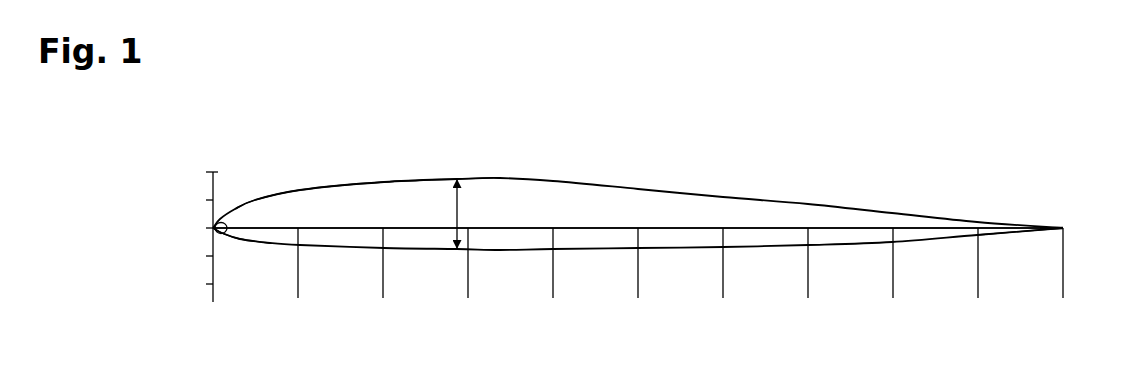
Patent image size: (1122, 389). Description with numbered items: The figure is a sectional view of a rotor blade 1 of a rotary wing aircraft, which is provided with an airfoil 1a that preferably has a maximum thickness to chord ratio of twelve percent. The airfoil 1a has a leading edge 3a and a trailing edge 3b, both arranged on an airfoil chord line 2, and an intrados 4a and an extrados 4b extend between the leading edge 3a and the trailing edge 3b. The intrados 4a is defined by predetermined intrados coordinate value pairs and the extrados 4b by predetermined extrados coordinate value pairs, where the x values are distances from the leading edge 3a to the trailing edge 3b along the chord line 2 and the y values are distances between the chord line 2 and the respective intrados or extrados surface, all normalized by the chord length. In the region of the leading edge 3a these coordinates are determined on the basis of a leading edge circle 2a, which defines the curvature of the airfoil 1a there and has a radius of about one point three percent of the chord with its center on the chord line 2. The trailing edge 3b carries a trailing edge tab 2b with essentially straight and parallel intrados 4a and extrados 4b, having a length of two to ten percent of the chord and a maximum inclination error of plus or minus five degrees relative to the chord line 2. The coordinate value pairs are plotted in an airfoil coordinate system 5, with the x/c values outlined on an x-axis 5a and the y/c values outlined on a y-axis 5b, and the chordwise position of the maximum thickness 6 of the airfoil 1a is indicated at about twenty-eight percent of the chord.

The rotor blade 1 is at (592, 204).
The airfoil 1a is at (388, 167).
The airfoil chord line 2 is at (780, 228).
The leading edge circle 2a is at (237, 232).
The trailing edge tab 2b is at (1035, 233).
The leading edge 3a is at (213, 218).
The trailing edge 3b is at (1062, 226).
The intrados 4a is at (518, 255).
The extrados 4b is at (555, 182).
The airfoil coordinate system 5 is at (580, 232).
The x-axis 5a is at (678, 230).
The y-axis 5b is at (213, 275).
The maximum thickness 6 is at (456, 214).